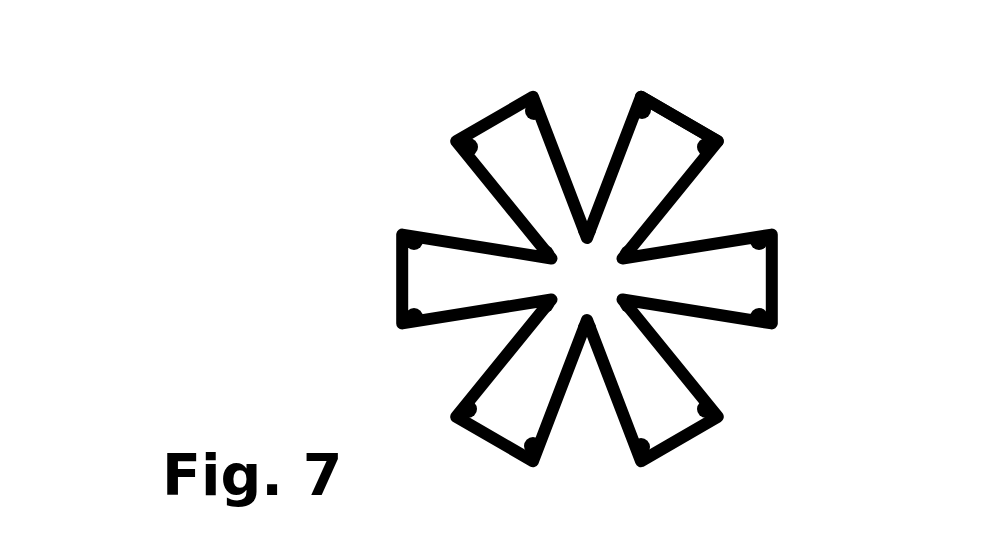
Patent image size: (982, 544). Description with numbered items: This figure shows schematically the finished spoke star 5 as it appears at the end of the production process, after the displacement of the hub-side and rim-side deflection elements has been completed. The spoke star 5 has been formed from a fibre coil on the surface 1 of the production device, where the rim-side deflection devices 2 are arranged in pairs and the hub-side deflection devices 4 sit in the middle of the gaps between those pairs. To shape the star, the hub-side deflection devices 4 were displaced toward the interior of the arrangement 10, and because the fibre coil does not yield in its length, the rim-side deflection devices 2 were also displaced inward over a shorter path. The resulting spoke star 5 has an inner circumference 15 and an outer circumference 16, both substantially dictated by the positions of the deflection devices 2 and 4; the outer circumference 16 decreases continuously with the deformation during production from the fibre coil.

The surface 1 is at (117, 107).
The arrangement 10 is at (408, 193).
The inner circumference 15 is at (612, 261).
The outer circumference 16 is at (672, 92).
The spoke star 5 is at (583, 103).
The rim-side deflection device 2 is at (712, 135).
The hub-side deflection device 4 is at (641, 236).